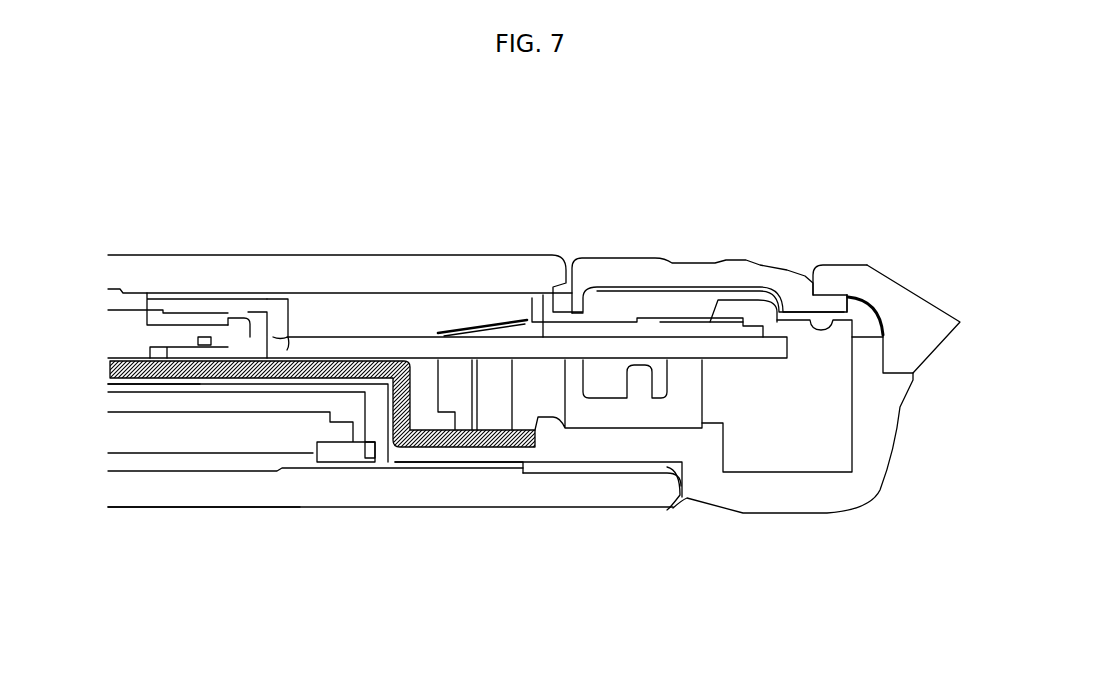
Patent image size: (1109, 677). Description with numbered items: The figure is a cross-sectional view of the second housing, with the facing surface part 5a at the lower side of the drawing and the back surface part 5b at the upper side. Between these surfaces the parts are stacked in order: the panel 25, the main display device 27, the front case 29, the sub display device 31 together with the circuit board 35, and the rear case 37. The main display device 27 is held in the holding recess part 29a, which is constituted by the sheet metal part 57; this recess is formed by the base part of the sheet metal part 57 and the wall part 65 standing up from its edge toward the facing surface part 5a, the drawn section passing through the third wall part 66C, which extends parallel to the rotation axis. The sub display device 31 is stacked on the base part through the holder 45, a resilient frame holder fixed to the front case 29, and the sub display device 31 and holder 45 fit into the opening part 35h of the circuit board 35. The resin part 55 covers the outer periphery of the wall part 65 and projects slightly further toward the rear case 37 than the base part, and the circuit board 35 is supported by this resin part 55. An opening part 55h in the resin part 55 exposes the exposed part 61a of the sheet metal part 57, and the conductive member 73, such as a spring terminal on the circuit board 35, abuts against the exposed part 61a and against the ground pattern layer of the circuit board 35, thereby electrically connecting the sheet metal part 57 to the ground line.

The facing surface part 5a is at (745, 517).
The back surface part 5b is at (830, 264).
The panel 25 is at (200, 505).
The main display device 27 is at (147, 455).
The front case 29 is at (890, 417).
The holding recess part 29a is at (222, 380).
The sub display device 31 is at (175, 308).
The circuit board 35 is at (683, 345).
The opening part 35h is at (293, 380).
The rear case 37 is at (875, 272).
The holder 45 is at (255, 335).
The resin part 55 is at (480, 457).
The opening part 55h is at (522, 462).
The sheet metal part 57 is at (293, 380).
The exposed part 61a is at (462, 432).
The wall part 65 is at (321, 488).
The third wall part 66C is at (395, 440).
The conductive member 73 is at (505, 400).